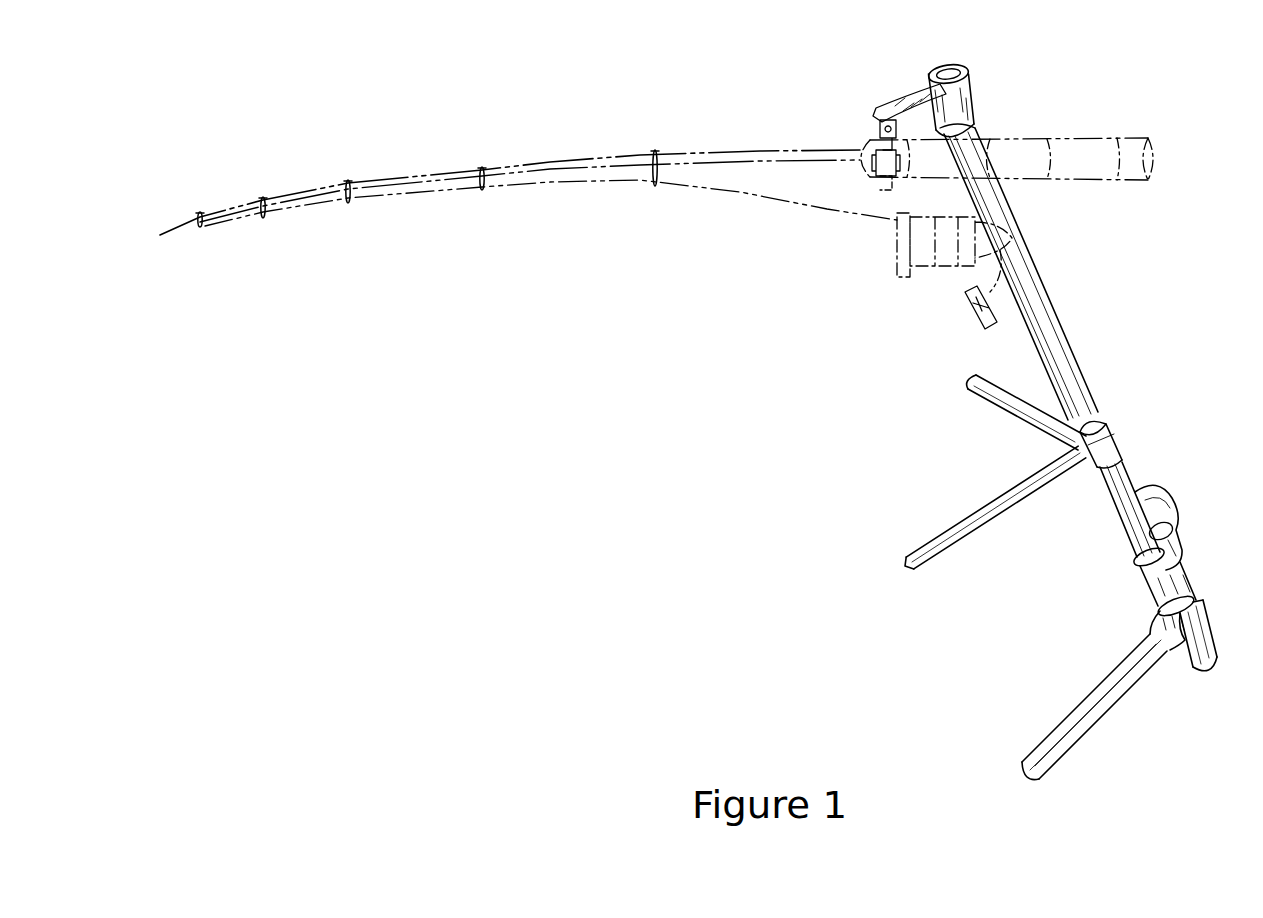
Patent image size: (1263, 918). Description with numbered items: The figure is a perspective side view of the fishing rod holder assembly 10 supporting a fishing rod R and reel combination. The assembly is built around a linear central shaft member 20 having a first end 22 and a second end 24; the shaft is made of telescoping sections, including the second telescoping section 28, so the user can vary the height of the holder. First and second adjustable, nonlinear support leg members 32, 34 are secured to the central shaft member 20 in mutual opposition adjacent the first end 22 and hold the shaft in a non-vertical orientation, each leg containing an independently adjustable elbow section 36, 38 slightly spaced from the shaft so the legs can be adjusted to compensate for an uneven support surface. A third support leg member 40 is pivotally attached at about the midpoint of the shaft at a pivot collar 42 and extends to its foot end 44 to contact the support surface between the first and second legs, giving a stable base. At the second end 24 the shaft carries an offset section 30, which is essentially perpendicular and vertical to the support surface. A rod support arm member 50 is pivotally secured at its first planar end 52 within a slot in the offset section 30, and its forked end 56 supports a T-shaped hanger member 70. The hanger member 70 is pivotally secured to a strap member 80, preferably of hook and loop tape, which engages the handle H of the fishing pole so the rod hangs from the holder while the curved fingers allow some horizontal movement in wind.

The fishing rod holder assembly 10 is at (868, 385).
The fishing rod R is at (684, 158).
The handle H is at (862, 170).
The strap member 80 is at (886, 178).
The rod support arm member 50 is at (897, 93).
The forked end 56 is at (883, 113).
The T-shaped hanger member 70 is at (885, 127).
The offset section 30 is at (967, 103).
The first planar end 52 is at (955, 70).
The second end 24 is at (957, 137).
The second telescoping section 28 is at (1025, 280).
The collar 42 is at (1080, 448).
The first support leg member 32 is at (1007, 410).
The third support leg member 40 is at (1008, 500).
The strut end 44 is at (913, 557).
The elbow section 36 is at (1157, 507).
The elbow section 38 is at (1170, 633).
The second support leg member 34 is at (1033, 763).
The first end 22 is at (1197, 653).
The central shaft member 20 is at (1082, 352).